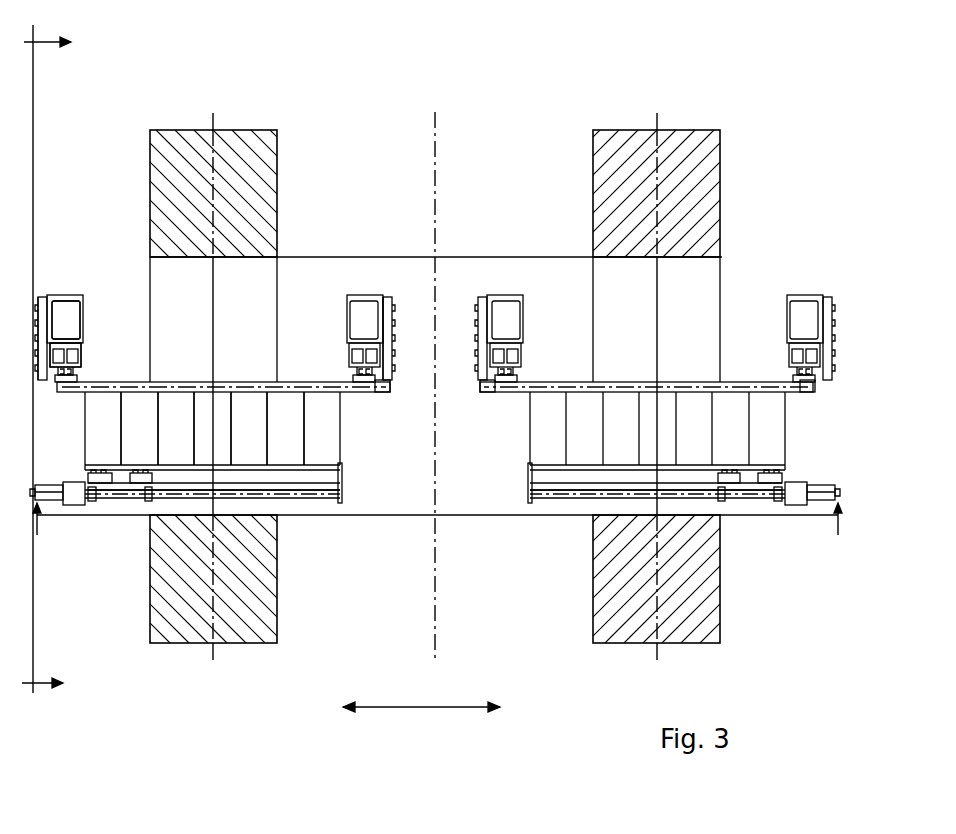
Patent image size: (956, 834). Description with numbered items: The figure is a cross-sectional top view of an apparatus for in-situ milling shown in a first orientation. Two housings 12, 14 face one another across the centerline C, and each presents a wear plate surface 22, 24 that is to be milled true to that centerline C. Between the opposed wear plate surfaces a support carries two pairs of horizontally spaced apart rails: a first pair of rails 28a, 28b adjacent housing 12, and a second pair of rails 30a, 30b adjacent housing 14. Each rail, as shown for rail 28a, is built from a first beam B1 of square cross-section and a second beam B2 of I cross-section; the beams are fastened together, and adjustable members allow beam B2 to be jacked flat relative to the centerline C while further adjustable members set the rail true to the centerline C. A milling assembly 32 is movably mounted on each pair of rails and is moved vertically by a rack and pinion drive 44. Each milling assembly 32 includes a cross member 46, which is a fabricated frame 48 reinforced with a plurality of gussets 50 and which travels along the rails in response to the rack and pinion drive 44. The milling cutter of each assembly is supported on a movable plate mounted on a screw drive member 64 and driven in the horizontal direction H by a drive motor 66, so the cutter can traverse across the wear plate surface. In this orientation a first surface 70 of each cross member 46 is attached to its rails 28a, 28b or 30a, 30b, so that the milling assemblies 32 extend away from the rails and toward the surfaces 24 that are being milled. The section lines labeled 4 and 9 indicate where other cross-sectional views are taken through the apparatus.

The housing 12 is at (283, 130).
The housing 14 is at (620, 130).
The wear plate surface 22 is at (274, 258).
The wear plate surface 24 is at (268, 510).
The rail 28a is at (94, 312).
The rail 28b is at (372, 295).
The rail 30a is at (502, 295).
The rail 30b is at (803, 293).
The first beam B1 is at (84, 330).
The second beam B2 is at (84, 352).
The milling assembly 32 is at (348, 468).
The rack and pinion drive 44 is at (372, 378).
The cross member 46 is at (283, 382).
The fabricated frame 48 is at (341, 436).
The gussets 50 is at (259, 442).
The screw drive member 64 is at (300, 496).
The drive motor 66 is at (48, 484).
The first surface 70 is at (327, 380).
The centerline C is at (383, 388).
The section line 4- 4 is at (46, 367).
The section line 9- 9 is at (440, 530).
The horizontal direction H is at (402, 707).